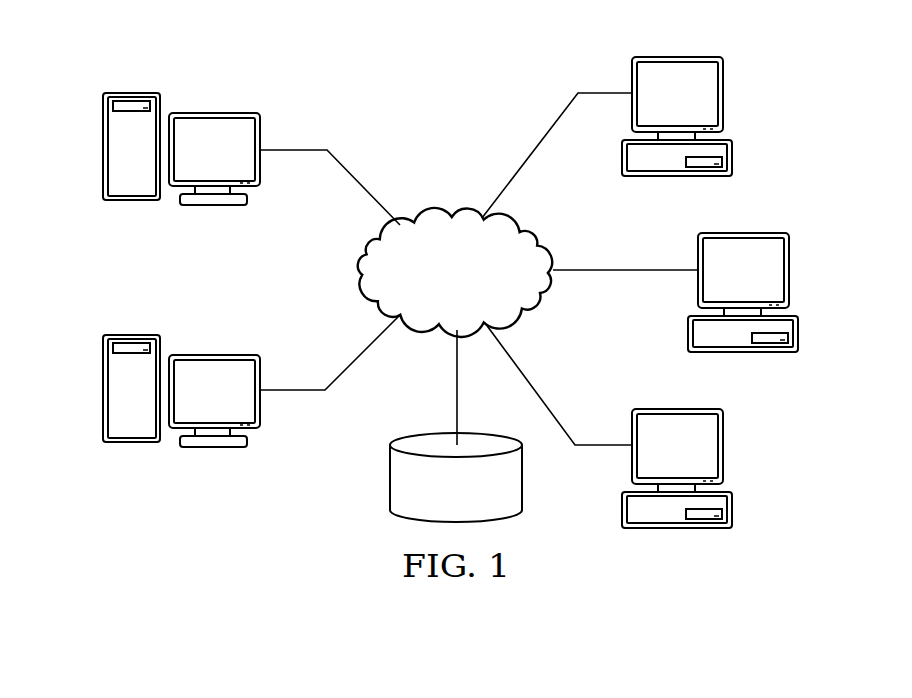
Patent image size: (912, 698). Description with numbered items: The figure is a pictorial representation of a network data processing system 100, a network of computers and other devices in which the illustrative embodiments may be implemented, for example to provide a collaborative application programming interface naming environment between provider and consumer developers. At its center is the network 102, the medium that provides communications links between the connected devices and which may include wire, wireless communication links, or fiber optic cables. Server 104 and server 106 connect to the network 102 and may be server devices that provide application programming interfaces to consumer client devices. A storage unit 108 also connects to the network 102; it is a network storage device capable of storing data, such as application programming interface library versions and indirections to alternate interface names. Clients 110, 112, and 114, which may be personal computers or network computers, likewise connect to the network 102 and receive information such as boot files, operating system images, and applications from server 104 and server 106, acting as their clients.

The network data processing system 100 is at (328, 58).
The network 102 is at (450, 211).
The server 104 is at (103, 147).
The server 106 is at (103, 387).
The storage unit 108 is at (388, 480).
The client 110 is at (732, 158).
The client 112 is at (797, 332).
The client 114 is at (730, 507).